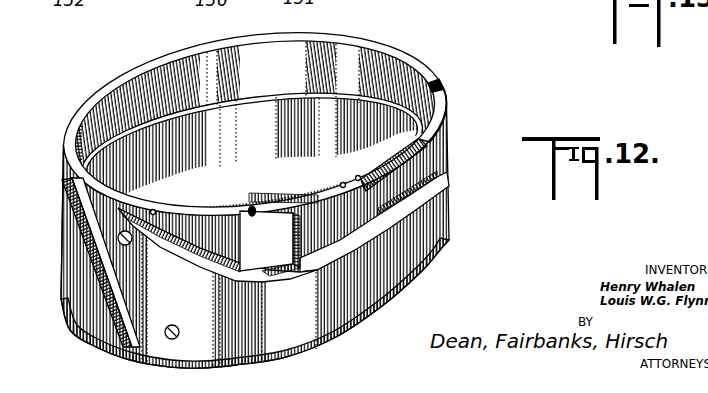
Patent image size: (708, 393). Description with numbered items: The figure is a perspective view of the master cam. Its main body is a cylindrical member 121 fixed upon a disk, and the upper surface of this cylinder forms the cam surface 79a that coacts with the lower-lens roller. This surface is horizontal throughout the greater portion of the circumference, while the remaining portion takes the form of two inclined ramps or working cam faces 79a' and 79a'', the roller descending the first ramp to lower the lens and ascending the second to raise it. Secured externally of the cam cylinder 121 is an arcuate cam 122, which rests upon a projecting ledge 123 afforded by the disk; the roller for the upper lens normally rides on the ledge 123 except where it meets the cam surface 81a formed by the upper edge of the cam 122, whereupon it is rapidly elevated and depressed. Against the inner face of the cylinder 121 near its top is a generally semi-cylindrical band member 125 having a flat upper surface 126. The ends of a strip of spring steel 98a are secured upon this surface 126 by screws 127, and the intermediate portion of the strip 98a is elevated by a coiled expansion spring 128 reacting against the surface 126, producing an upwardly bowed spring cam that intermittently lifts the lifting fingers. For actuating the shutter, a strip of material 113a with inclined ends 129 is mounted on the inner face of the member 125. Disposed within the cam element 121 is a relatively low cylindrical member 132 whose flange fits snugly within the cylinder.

The cylindrical member 121 is at (436, 188).
The arcuate cam 122 is at (66, 220).
The projecting ledge 123 is at (337, 328).
The semi-cylindrical band member 125 is at (293, 266).
The flat upper surface 126 is at (431, 124).
The screws 127 is at (156, 211).
The coiled expansion spring 128 is at (256, 217).
The inclined ends 129 is at (430, 110).
The low cylindrical member 132 is at (271, 117).
The cam surface 79a is at (255, 109).
The inclined ramp 79a' is at (217, 257).
The inclined ramp 79a'' is at (374, 237).
The cam surface 81a is at (84, 260).
The strip of spring steel 98a is at (247, 200).
The strip of material 113a is at (421, 146).